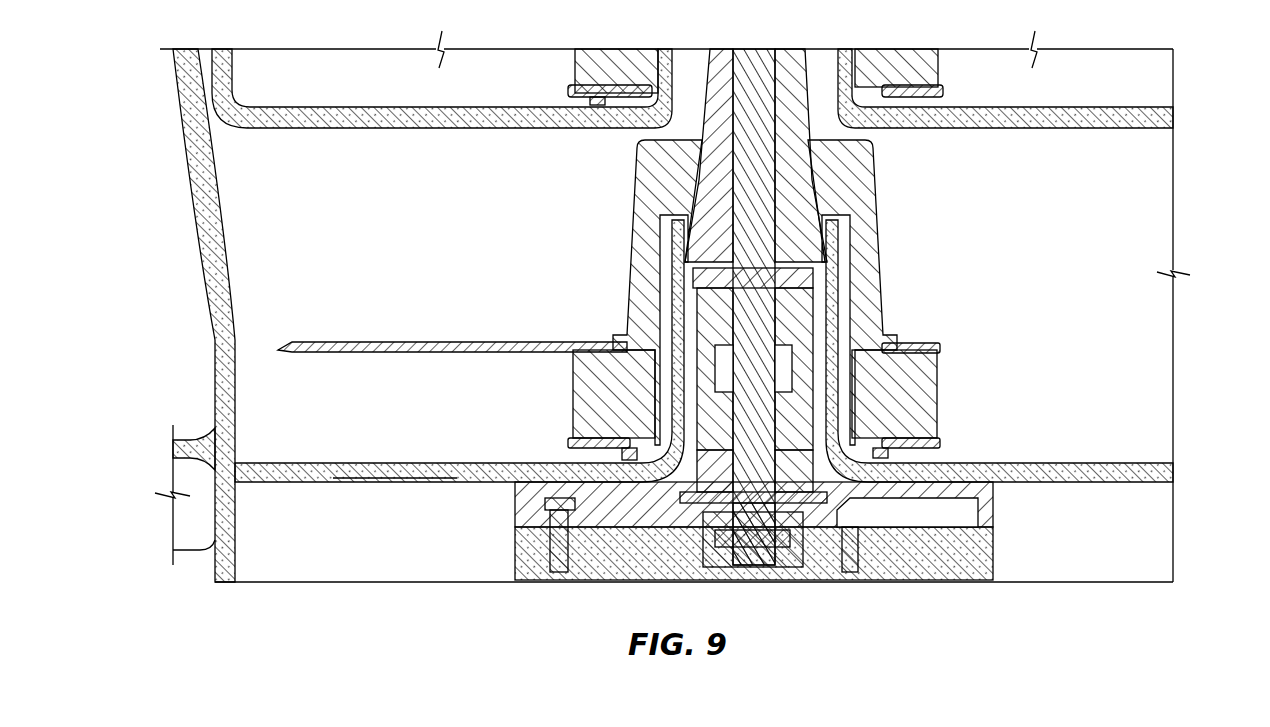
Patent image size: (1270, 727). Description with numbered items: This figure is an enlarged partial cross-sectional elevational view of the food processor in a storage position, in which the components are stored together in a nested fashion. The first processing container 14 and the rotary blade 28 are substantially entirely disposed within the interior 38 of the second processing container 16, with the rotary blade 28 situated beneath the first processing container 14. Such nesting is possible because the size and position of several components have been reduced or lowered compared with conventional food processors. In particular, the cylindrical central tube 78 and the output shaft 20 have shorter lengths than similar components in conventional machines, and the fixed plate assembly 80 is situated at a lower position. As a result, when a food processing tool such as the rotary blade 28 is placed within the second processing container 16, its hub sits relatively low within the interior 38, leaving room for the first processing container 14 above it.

The first processing container 14 is at (1103, 60).
The second processing container 16 is at (1160, 208).
The output shaft 20 is at (745, 316).
The rotary blade 28 is at (672, 400).
The interior 38 is at (288, 212).
The cylindrical central tube 78 is at (690, 398).
The fixed plate assembly 80 is at (697, 332).